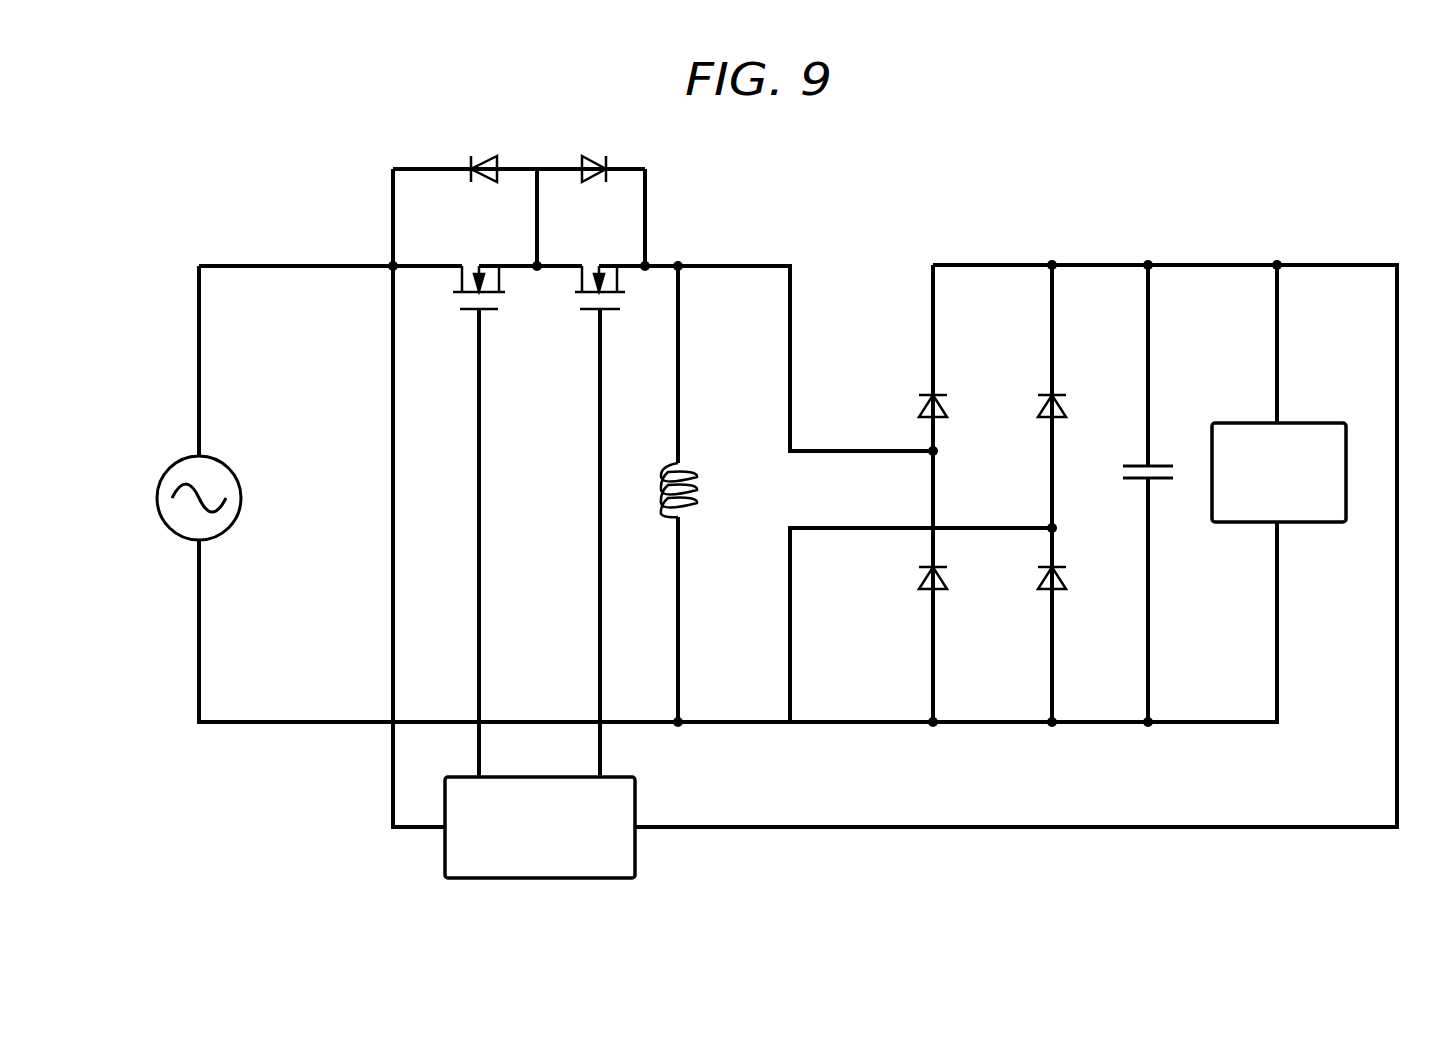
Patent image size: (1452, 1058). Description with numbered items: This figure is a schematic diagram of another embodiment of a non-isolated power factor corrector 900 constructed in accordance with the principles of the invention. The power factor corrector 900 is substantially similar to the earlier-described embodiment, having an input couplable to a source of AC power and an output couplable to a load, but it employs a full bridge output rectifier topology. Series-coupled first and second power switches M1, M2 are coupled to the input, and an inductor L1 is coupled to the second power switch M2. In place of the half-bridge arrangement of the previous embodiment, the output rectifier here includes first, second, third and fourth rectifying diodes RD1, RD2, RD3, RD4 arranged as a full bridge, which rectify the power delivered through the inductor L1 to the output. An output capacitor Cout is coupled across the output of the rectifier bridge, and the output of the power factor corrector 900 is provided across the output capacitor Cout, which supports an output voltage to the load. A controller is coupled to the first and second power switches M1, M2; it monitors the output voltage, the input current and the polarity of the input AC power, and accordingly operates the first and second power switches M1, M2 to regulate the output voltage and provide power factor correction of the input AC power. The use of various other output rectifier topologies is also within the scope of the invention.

The non-isolated power factor corrector 900 is at (842, 215).
The first power switch M1 is at (484, 308).
The second power switch M2 is at (606, 308).
The inductor L1 is at (700, 490).
The first rectifying diode RD1 is at (907, 412).
The second rectifying diode RD2 is at (1026, 412).
The third rectifying diode RD3 is at (907, 580).
The fourth rectifying diode RD4 is at (1027, 578).
The output capacitor Cout is at (1128, 455).